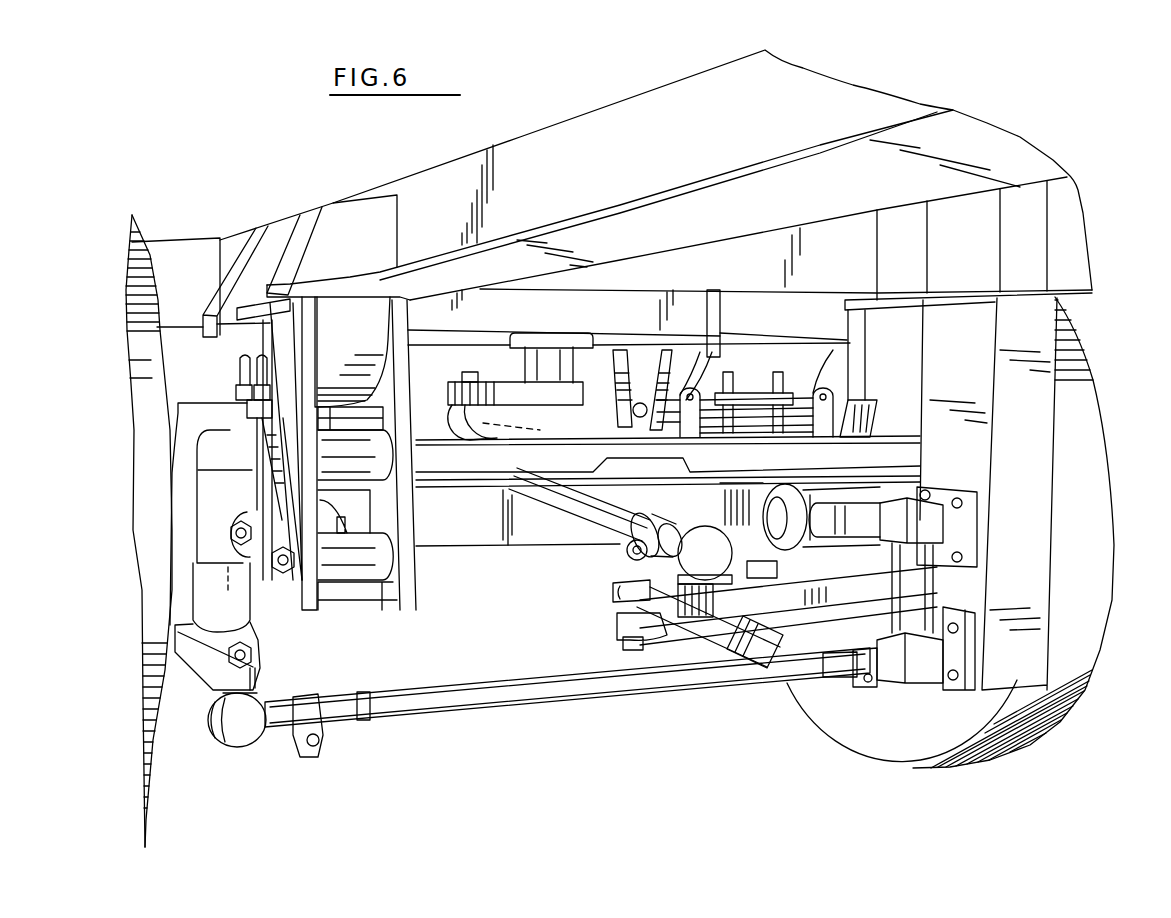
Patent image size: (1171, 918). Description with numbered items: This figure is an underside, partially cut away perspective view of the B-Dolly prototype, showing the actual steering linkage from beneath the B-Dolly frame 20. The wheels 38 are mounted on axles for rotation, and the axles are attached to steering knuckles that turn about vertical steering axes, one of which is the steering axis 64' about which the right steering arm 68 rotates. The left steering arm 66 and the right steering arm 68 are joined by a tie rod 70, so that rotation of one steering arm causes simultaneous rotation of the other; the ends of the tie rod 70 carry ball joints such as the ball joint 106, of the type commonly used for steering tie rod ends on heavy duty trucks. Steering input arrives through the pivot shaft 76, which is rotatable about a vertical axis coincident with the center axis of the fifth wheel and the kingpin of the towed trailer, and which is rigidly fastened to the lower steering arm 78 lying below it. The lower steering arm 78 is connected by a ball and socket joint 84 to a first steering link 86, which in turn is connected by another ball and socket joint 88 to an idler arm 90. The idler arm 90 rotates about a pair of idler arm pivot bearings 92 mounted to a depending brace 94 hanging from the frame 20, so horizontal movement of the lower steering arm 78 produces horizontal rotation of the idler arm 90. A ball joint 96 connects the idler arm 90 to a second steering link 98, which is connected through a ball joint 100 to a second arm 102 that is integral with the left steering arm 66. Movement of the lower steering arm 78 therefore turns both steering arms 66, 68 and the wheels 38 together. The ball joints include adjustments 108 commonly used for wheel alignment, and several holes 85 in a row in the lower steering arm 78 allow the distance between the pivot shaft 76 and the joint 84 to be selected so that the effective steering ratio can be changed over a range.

The B-Dolly frame 20 is at (1037, 157).
The wheels 38 is at (1100, 572).
The vertical steering axis 64' is at (164, 517).
The left steering arm 66 is at (838, 615).
The right steering arm 68 is at (247, 633).
The tie rod 70 is at (557, 697).
The pivot shaft 76 is at (540, 367).
The lower steering arm 78 is at (545, 398).
The ball and socket joint 84 is at (457, 410).
The holes 85 is at (483, 423).
The first steering link 86 is at (582, 505).
The ball and socket joint 88 is at (697, 560).
The idler arm 90 is at (842, 578).
The idler arm pivot bearings 92 is at (917, 623).
The depending brace 94 is at (933, 510).
The ball joint 96 is at (760, 643).
The second steering link 98 is at (727, 627).
The ball joint 100 is at (613, 600).
The second arm 102 is at (660, 640).
The ball joint 106 is at (238, 733).
The adjustments 108 is at (653, 522).